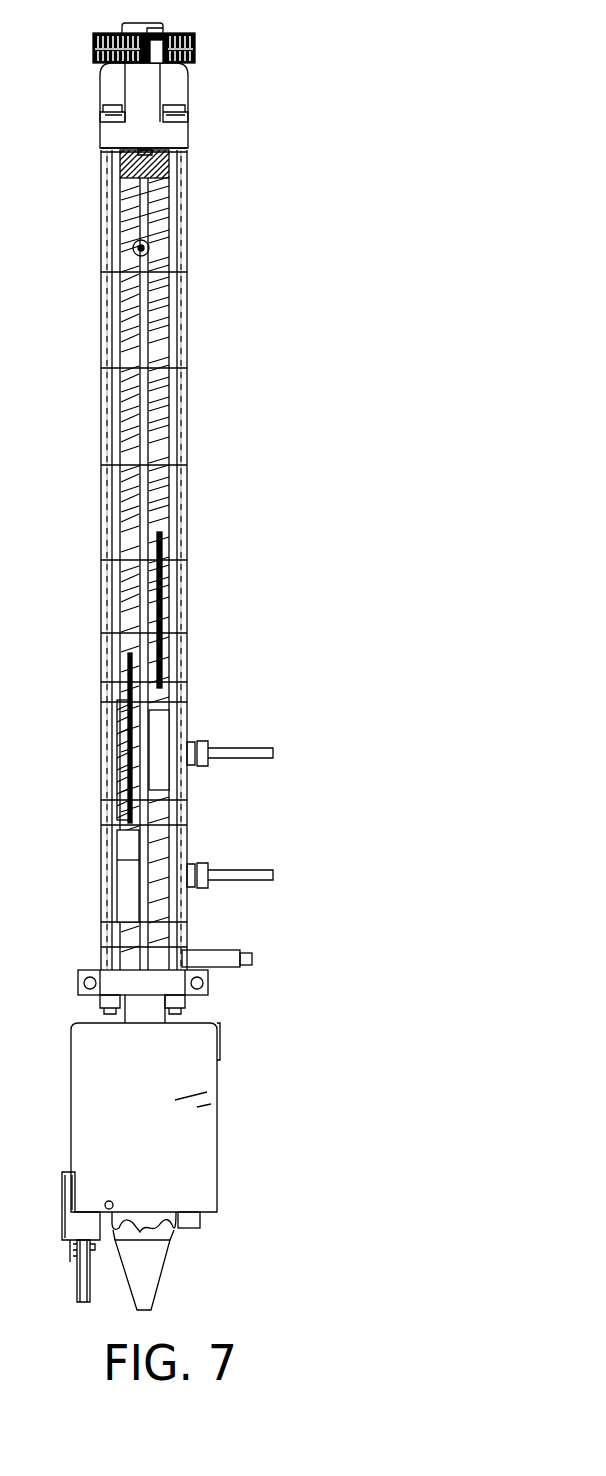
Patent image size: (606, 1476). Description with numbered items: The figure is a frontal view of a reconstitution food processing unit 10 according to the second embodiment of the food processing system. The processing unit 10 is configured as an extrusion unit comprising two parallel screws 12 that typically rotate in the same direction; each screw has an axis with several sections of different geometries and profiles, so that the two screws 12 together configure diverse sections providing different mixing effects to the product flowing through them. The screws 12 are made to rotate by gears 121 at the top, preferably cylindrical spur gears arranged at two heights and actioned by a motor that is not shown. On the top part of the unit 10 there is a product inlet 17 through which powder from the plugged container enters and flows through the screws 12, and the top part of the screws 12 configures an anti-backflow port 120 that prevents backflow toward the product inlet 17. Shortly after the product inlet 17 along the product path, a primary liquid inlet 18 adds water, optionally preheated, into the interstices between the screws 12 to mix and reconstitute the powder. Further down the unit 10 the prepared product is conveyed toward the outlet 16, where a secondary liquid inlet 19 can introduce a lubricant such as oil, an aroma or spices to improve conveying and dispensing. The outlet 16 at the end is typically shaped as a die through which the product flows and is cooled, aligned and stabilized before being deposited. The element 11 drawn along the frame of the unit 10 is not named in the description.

The food processing unit 10 is at (251, 492).
The guide rails 11 is at (103, 757).
The screws 12 is at (125, 300).
The outlet 16 is at (165, 1265).
The product inlet 17 is at (125, 195).
The primary liquid inlet 18 is at (132, 244).
The secondary liquid inlet 19 is at (254, 958).
The anti-backflow port 120 is at (120, 155).
The gears 121 is at (93, 37).